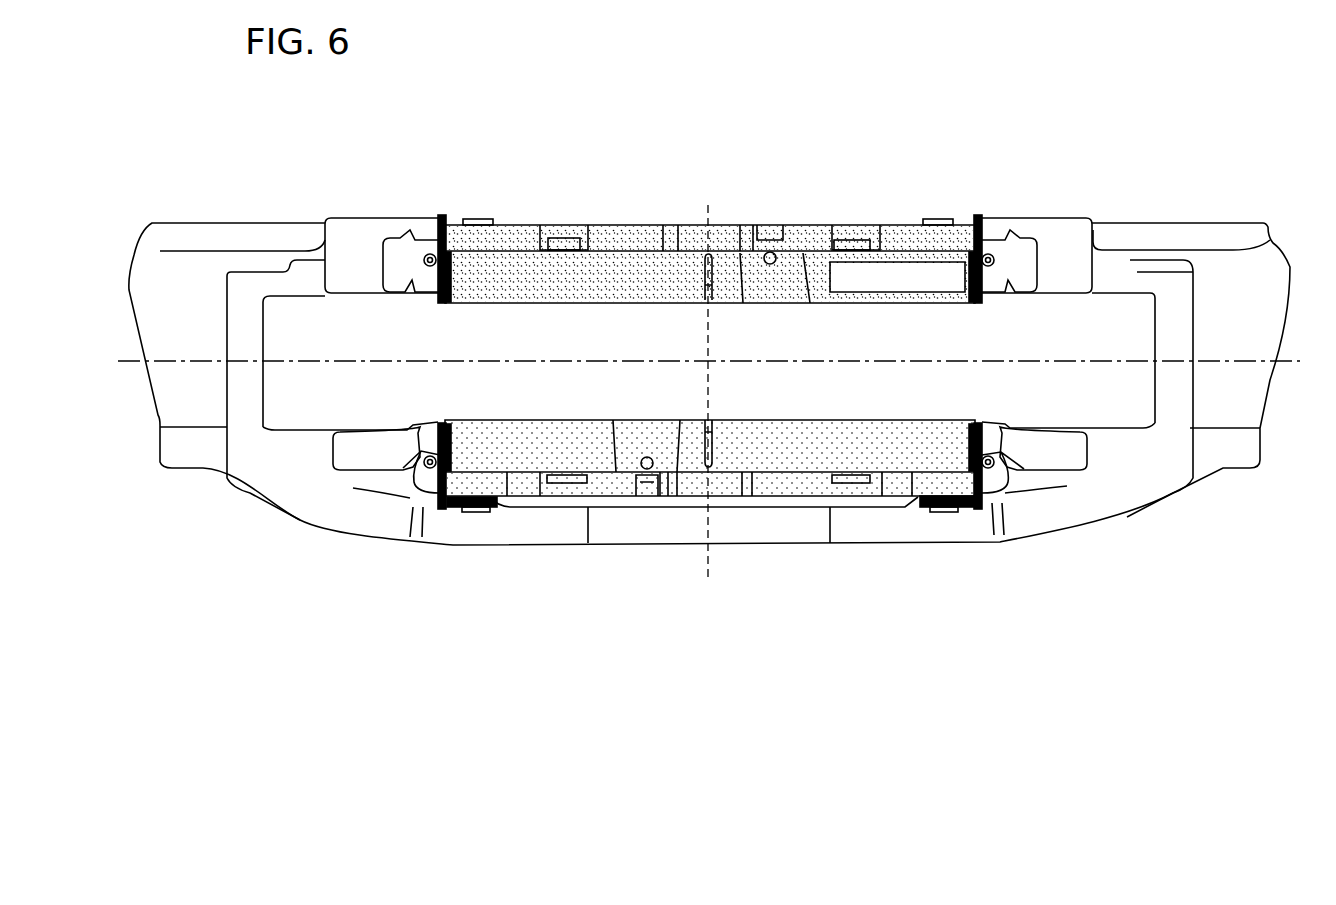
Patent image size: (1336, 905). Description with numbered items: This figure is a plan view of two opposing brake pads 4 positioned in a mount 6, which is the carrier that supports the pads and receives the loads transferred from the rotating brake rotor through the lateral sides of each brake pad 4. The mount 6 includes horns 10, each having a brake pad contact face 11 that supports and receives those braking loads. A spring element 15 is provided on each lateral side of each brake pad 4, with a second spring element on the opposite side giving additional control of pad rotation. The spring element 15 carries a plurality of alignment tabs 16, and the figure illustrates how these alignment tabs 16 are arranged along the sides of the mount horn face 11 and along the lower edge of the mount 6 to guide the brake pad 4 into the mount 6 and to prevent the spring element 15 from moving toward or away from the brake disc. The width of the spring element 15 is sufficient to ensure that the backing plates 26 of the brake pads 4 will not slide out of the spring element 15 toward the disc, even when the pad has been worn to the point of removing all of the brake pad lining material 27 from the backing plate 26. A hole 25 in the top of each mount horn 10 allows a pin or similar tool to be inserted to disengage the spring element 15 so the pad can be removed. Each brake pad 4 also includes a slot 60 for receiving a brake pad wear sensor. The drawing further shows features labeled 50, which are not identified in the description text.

The brake pad 4 is at (508, 419).
The mount 6 is at (1170, 222).
The horn 10 is at (1077, 218).
The brake pad contact face 11 is at (983, 232).
The spring element 15 is at (446, 421).
The alignment tab 16 is at (976, 219).
The hole 25 is at (424, 255).
The backing plate 26 is at (637, 225).
The brake pad lining material 27 is at (837, 419).
The clip 50 is at (565, 237).
The slot 60 is at (770, 265).